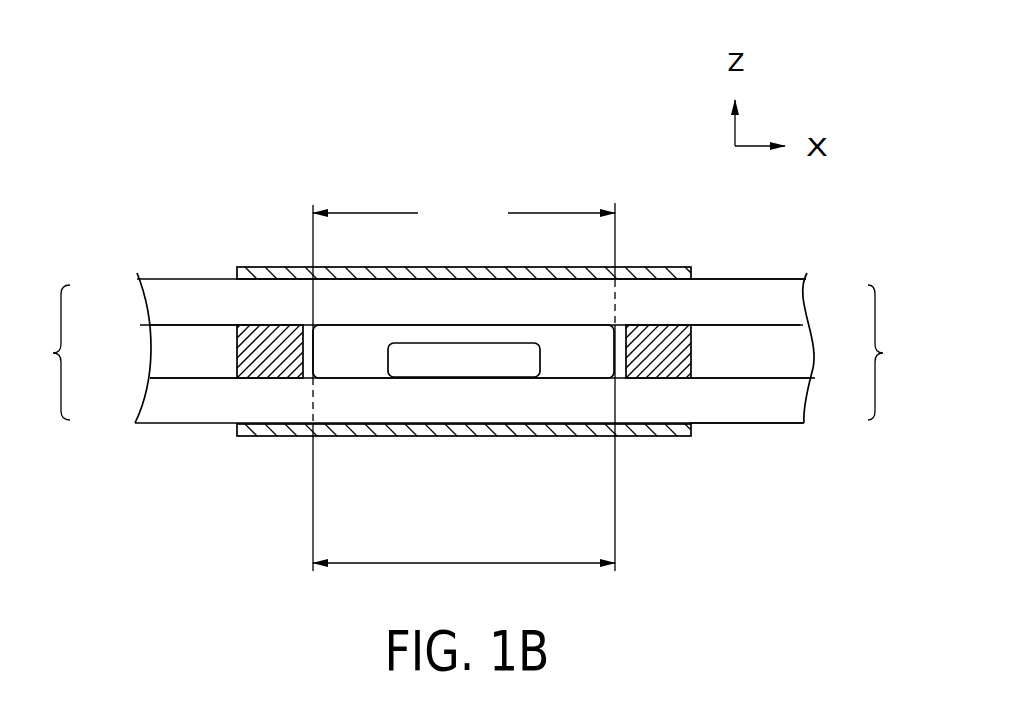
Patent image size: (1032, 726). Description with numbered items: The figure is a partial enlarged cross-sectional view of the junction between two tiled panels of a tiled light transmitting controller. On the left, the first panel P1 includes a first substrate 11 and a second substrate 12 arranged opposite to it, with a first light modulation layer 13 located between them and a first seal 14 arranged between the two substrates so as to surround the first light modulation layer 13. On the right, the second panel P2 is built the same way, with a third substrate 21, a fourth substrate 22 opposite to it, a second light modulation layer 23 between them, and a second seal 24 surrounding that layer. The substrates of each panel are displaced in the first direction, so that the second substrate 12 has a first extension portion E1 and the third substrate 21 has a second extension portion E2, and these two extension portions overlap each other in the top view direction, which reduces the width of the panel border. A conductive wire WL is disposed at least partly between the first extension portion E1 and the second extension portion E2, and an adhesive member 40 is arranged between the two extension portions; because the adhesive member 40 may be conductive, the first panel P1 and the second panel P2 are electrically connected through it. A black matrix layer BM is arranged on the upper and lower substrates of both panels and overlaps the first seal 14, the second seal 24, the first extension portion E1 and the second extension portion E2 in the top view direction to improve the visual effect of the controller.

The first substrate 11 is at (136, 304).
The second substrate 12 is at (150, 405).
The first light modulation layer 13 is at (150, 350).
The first seal 14 is at (250, 363).
The third substrate 21 is at (800, 303).
The fourth substrate 22 is at (800, 403).
The second light modulation layer 23 is at (800, 363).
The second seal 24 is at (677, 340).
The first panel P1 is at (44, 352).
The second panel P2 is at (891, 352).
The black matrix layer BM is at (270, 273).
The conductive wire WL is at (477, 367).
The adhesive member 40 is at (572, 365).
The first extension portion E1 is at (464, 448).
The second extension portion E2 is at (464, 301).